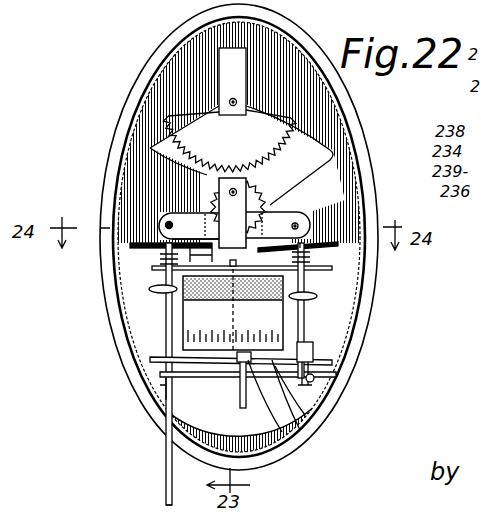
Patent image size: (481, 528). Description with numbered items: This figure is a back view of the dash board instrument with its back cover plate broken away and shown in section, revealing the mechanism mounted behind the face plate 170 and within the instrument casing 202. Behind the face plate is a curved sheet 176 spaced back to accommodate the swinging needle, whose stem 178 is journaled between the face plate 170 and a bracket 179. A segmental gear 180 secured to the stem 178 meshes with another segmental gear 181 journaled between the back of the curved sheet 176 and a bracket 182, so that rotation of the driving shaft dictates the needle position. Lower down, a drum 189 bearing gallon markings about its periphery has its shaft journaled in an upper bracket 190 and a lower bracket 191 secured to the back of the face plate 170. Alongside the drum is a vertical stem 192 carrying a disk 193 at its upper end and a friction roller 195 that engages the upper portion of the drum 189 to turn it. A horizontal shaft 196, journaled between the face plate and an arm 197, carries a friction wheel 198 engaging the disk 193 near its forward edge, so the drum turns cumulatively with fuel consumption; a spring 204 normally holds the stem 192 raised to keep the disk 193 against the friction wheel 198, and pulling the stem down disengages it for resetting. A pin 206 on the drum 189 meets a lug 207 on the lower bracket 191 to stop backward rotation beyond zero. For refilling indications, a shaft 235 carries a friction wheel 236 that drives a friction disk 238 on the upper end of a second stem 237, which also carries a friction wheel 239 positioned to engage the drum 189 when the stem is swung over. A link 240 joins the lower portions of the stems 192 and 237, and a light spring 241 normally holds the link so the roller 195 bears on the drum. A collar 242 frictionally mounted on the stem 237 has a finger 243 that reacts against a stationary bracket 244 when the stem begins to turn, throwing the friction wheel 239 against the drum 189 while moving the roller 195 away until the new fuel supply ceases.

The face plate 170 is at (287, 78).
The curved sheet 176 is at (320, 178).
The stem 178 is at (228, 100).
The bracket 179 is at (230, 65).
The segmental gear 180 is at (229, 141).
The segmental gear 181 is at (265, 205).
The bracket 182 is at (272, 213).
The drum 189 is at (185, 318).
The upper bracket 190 is at (208, 258).
The lower bracket 191 is at (308, 408).
The vertical stem 192 is at (160, 360).
The disk 193 is at (152, 266).
The friction roller 195 is at (164, 300).
The shaft 196 is at (165, 224).
The arm 197 is at (165, 208).
The friction wheel 198 is at (160, 236).
The instrument casing 202 is at (287, 42).
The spring 204 is at (150, 288).
The pin 206 is at (165, 373).
The lug 207 is at (283, 440).
The shaft 235 is at (332, 248).
The friction wheel 236 is at (308, 223).
The stem 237 is at (310, 330).
The friction disk 238 is at (310, 262).
The friction wheel 239 is at (318, 296).
The link 240 is at (290, 432).
The spring 241 is at (242, 412).
The collar 242 is at (313, 352).
The finger 243 is at (318, 385).
The stationary bracket 244 is at (320, 370).